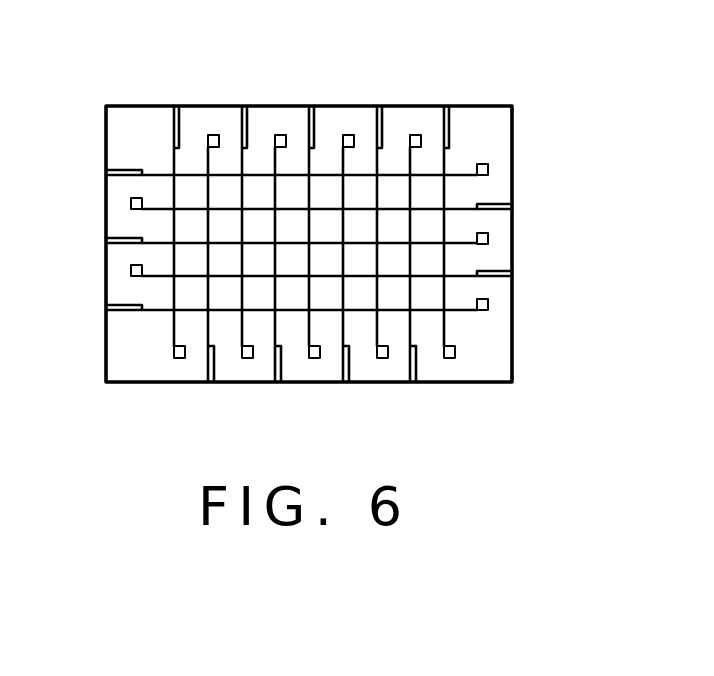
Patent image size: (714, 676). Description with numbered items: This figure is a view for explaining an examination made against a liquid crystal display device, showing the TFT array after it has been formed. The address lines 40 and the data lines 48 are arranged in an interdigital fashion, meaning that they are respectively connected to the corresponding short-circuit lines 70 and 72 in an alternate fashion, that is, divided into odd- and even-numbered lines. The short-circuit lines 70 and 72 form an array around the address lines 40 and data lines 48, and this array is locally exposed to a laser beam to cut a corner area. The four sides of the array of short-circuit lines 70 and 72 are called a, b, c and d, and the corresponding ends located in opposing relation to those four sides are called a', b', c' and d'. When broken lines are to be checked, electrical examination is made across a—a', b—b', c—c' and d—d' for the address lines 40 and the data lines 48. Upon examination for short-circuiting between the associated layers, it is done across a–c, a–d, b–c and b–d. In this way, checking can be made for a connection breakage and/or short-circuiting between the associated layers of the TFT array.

The address lines 40 is at (460, 210).
The data lines 48 is at (206, 162).
The short-circuit line 70 is at (105, 342).
The short-circuit line 72 is at (410, 107).
The side a is at (275, 213).
The end a' is at (301, 272).
The side b is at (380, 272).
The end b' is at (341, 213).
The side c is at (91, 234).
The end c' is at (341, 226).
The side d is at (342, 184).
The end d' is at (278, 192).